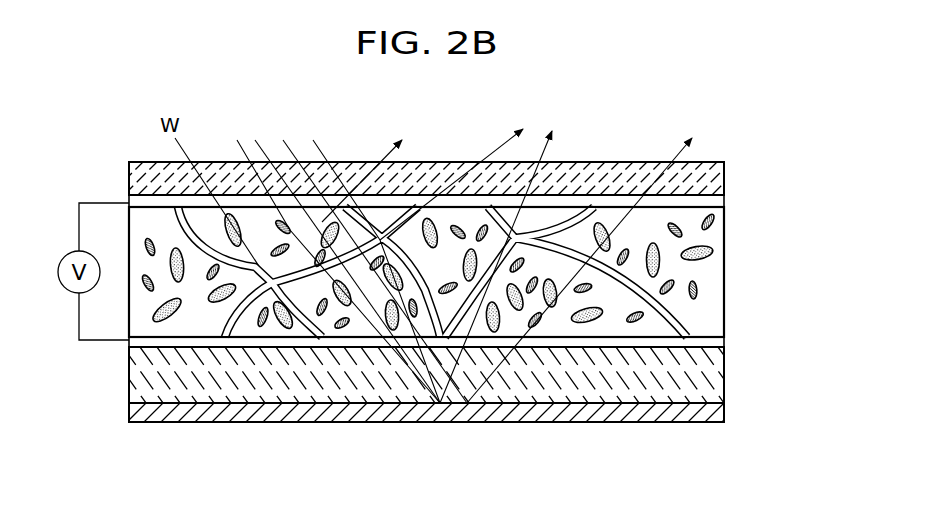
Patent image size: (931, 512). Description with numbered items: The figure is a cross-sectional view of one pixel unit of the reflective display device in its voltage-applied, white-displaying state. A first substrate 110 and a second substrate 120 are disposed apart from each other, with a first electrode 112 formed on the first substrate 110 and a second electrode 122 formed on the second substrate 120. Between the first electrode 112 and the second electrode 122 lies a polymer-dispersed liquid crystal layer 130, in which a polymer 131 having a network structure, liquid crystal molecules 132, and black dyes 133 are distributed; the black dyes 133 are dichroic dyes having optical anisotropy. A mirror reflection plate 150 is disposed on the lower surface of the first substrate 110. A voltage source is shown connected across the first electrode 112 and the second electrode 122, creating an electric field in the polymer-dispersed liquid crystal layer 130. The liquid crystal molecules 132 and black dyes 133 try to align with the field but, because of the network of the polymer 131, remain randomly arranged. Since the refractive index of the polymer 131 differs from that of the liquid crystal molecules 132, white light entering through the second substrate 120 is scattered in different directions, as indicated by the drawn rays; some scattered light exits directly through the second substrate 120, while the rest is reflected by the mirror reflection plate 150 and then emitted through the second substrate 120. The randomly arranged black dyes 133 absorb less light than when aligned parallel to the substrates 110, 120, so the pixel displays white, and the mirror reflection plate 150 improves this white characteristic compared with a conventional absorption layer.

The first substrate 110 is at (726, 374).
The first electrode 112 is at (726, 343).
The second substrate 120 is at (726, 182).
The second electrode 122 is at (726, 203).
The polymer-dispersed liquid crystal layer 130 is at (788, 233).
The polymer 131 is at (672, 296).
The liquid crystal molecules 132 is at (708, 250).
The black dyes 133 is at (703, 292).
The mirror reflection plate 150 is at (726, 412).